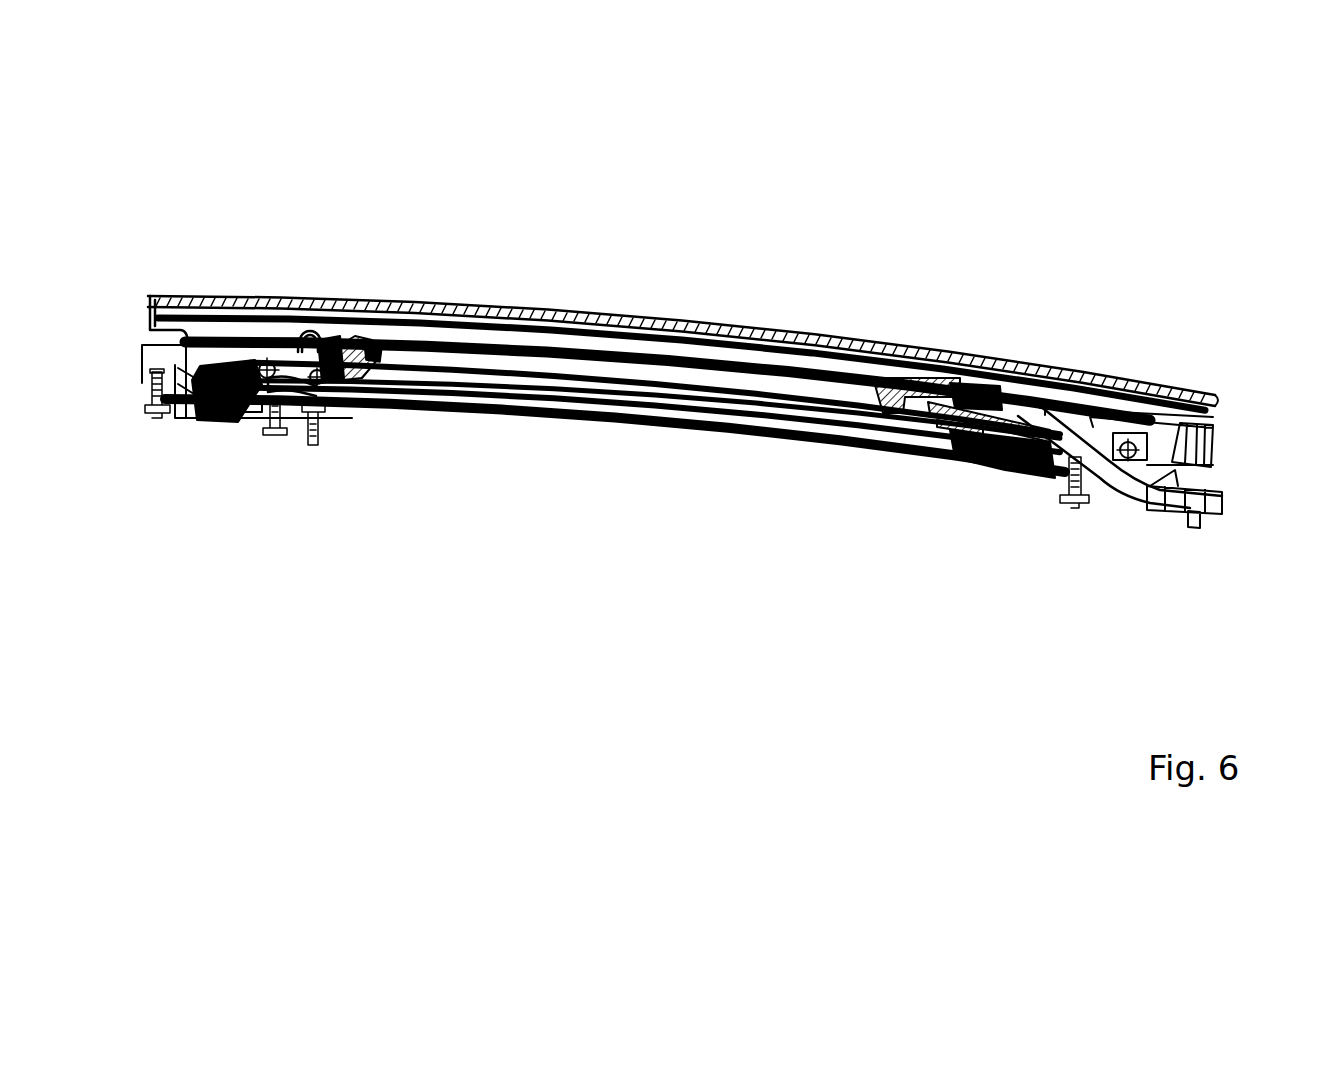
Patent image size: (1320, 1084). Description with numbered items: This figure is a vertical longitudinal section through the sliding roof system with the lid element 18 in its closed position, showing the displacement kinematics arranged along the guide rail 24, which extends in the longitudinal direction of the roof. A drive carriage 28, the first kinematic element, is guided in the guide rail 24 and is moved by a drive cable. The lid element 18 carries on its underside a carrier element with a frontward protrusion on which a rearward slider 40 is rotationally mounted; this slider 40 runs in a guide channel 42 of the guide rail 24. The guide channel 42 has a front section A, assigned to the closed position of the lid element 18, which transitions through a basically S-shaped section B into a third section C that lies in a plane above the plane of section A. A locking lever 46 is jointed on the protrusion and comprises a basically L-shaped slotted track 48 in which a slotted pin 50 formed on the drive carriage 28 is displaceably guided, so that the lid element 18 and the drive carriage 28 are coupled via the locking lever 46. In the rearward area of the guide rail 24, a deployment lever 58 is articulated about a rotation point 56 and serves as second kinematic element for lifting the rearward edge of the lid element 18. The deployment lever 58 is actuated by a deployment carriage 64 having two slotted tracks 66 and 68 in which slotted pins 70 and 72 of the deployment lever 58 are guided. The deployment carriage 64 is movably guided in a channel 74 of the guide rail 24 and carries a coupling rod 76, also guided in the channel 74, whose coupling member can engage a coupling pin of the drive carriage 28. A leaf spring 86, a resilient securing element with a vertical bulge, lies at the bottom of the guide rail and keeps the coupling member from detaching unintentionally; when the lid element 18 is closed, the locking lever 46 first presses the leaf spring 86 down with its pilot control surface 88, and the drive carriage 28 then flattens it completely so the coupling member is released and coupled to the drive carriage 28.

The lid element 18 is at (698, 322).
The guide rail 24 is at (645, 430).
The drive carriage 28 is at (1030, 475).
The slider 40 is at (1160, 510).
The guide channel 42 is at (1123, 487).
The locking lever 46 is at (918, 395).
The slotted track 48 is at (975, 390).
The slotted pin 50 is at (1033, 408).
The rotation point 56 is at (200, 418).
The deployment lever 58 is at (243, 418).
The deployment carriage 64 is at (368, 352).
The slotted track 66 is at (352, 343).
The slotted track 68 is at (308, 335).
The slotted pin 70 is at (323, 400).
The slotted pin 72 is at (262, 362).
The channel 74 is at (738, 413).
The coupling rod 76 is at (823, 413).
The leaf spring 86 is at (953, 467).
The pilot control surface 88 is at (928, 438).
The front section A is at (1163, 483).
The S-shaped section B is at (1100, 430).
The third section C is at (754, 385).